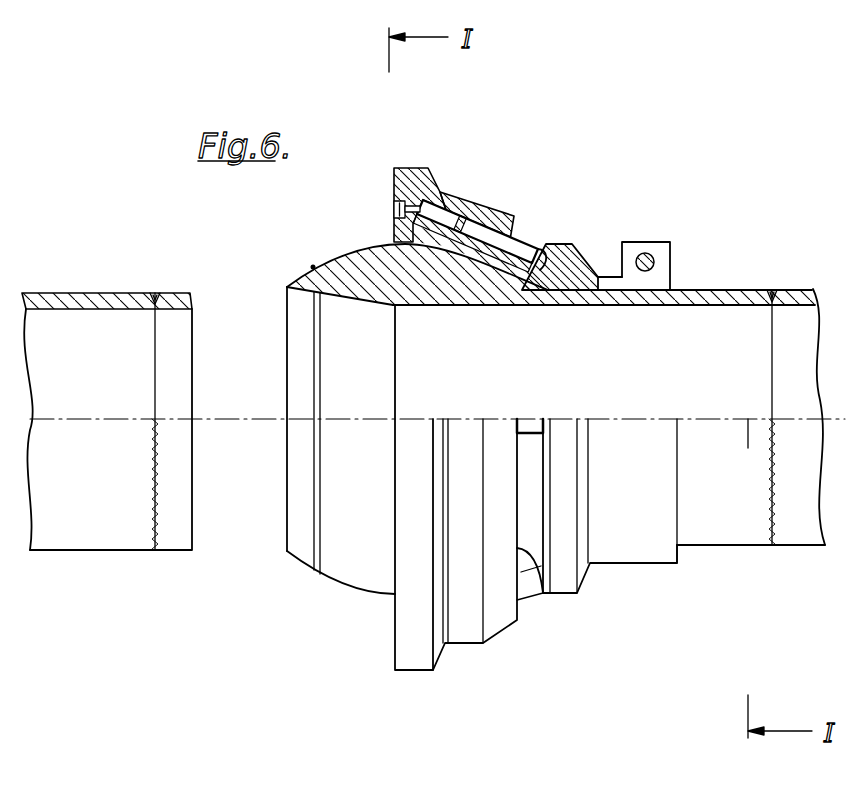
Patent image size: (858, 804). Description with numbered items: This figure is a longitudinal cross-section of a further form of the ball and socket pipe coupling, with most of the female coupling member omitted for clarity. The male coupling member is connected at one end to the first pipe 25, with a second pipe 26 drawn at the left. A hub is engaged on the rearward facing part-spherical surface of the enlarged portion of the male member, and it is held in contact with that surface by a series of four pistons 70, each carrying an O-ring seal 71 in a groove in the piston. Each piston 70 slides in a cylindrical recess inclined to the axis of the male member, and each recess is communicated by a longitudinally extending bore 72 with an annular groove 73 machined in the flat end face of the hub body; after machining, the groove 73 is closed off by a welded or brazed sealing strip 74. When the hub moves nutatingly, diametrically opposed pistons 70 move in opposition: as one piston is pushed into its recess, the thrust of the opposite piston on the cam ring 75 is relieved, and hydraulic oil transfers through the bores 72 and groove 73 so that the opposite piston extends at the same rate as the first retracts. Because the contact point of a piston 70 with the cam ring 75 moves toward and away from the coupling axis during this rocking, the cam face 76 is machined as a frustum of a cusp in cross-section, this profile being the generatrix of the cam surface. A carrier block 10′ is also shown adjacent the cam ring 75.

The pipe 26 is at (103, 291).
The first pipe 25 is at (792, 296).
The piston 70 is at (512, 242).
The O-ring seal 71 is at (465, 222).
The longitudinally extending bore 72 is at (429, 170).
The annular groove 73 is at (395, 205).
The sealing strip 74 is at (395, 209).
The cam ring 75 is at (575, 244).
The cam face 76 is at (548, 240).
The carrier block 10′ is at (655, 260).